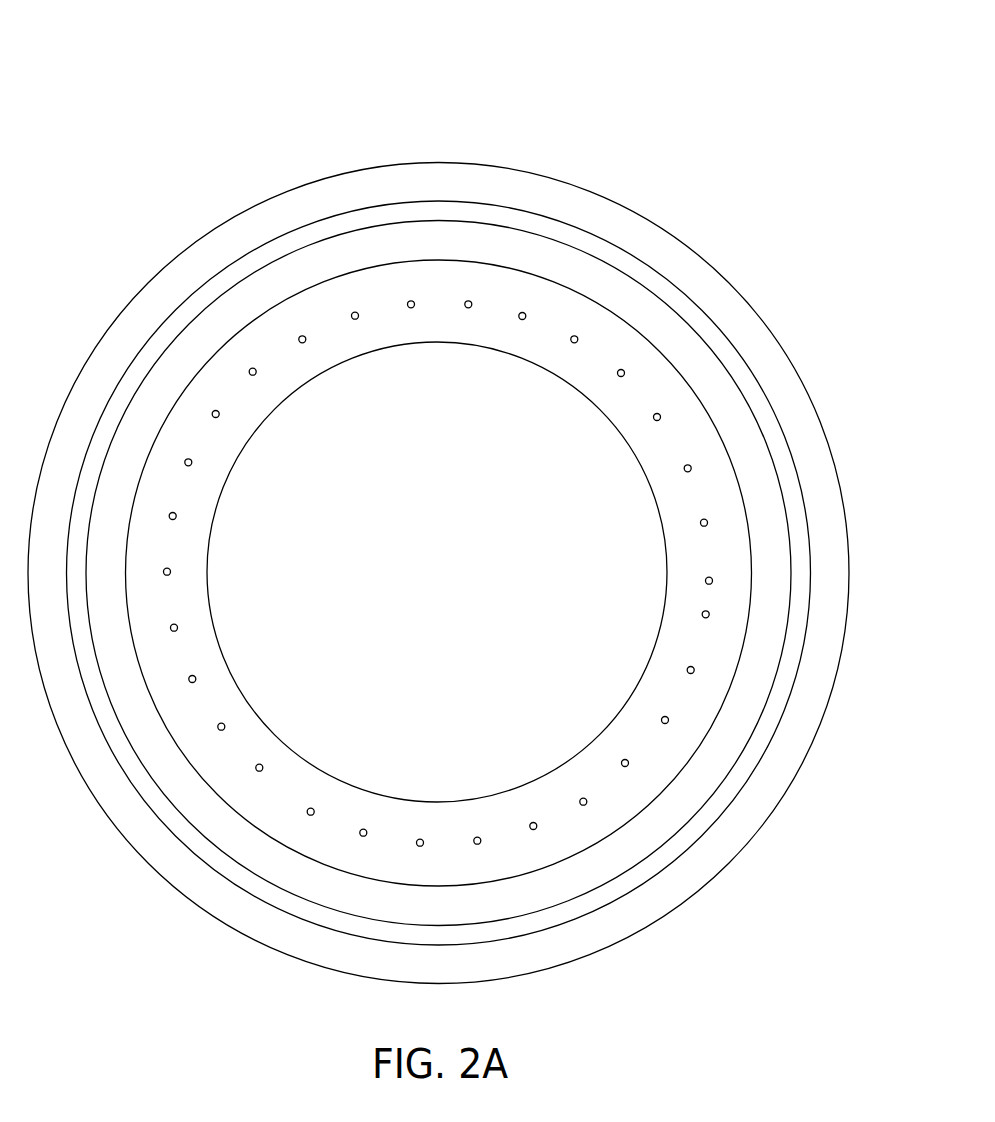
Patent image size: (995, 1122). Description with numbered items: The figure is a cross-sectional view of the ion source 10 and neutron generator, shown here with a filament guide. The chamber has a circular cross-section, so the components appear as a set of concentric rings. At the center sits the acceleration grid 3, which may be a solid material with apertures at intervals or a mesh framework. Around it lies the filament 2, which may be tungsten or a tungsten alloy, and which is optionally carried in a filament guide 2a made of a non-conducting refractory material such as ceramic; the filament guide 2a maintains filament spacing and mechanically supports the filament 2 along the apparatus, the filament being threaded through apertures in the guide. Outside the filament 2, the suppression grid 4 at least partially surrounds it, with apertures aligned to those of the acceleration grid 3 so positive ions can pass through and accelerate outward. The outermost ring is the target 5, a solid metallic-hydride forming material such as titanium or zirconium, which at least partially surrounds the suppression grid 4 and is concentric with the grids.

The ion source 10 is at (318, 34).
The target 5 is at (722, 288).
The suppression grid 4 is at (768, 440).
The filament 2 is at (700, 413).
The filament guide 2a is at (608, 365).
The acceleration grid 3 is at (295, 755).